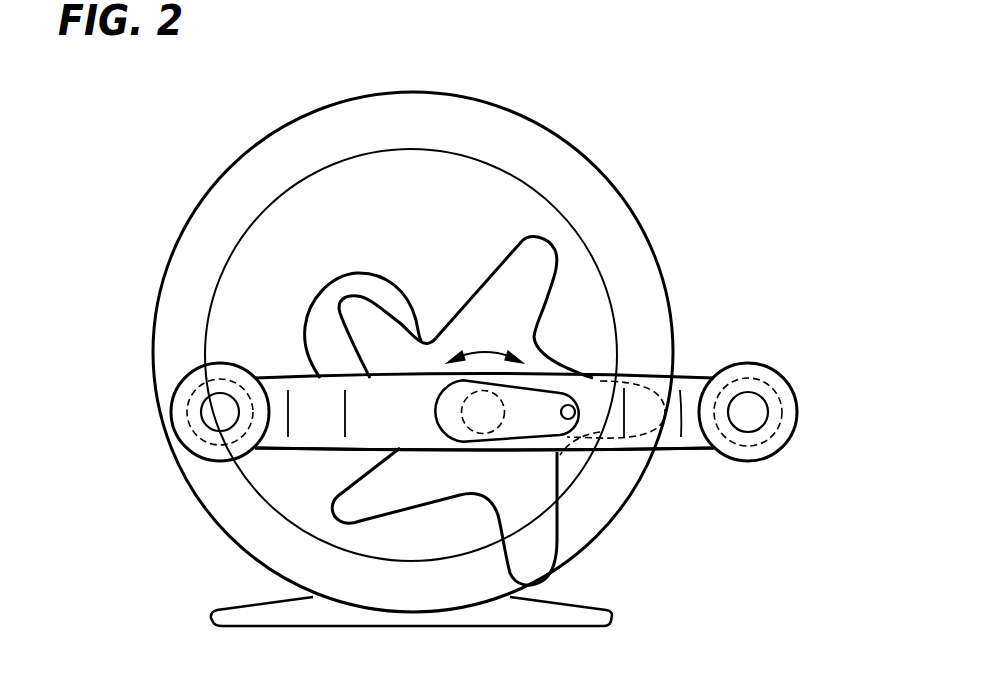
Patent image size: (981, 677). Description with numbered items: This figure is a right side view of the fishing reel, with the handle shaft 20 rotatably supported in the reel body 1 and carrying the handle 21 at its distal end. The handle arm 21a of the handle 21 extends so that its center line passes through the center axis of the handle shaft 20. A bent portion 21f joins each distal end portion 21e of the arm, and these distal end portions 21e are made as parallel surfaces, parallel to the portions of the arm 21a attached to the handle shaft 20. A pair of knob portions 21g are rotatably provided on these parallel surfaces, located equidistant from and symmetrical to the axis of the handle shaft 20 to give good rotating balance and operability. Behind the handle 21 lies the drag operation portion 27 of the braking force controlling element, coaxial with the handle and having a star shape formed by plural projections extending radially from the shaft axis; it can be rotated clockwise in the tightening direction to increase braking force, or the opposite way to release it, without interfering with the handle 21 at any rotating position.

The reel body 1 is at (553, 138).
The handle shaft 20 is at (465, 425).
The handle 21 is at (686, 374).
The handle arm 21a is at (350, 449).
The distal end portions 21e is at (270, 378).
The bent portion 21f is at (300, 440).
The knob portion 21g is at (182, 422).
The drag operation portion 27 is at (513, 280).